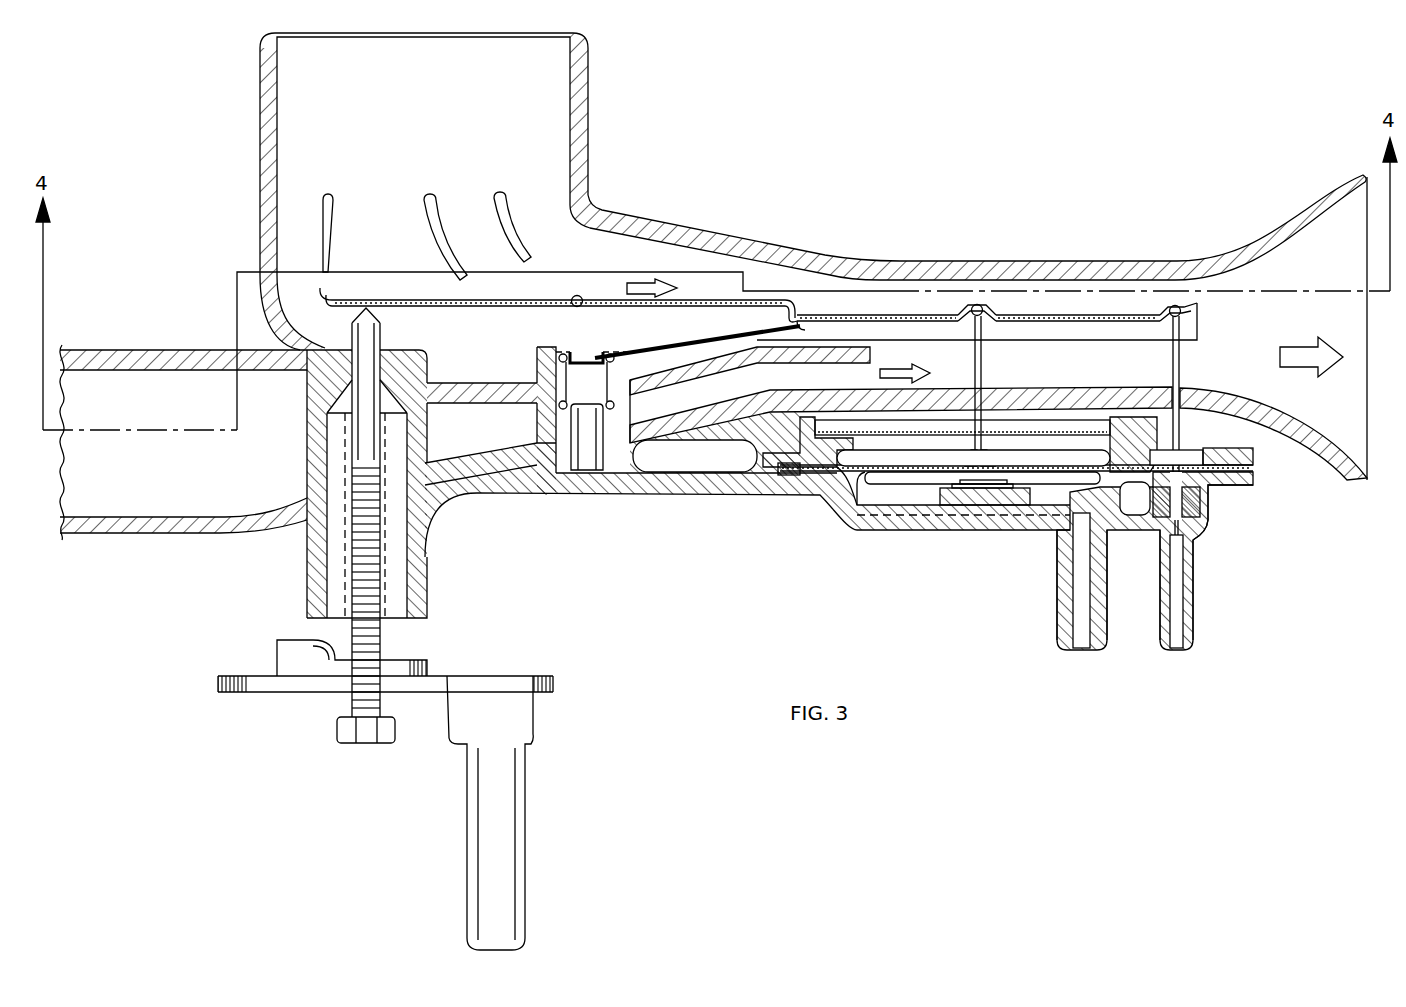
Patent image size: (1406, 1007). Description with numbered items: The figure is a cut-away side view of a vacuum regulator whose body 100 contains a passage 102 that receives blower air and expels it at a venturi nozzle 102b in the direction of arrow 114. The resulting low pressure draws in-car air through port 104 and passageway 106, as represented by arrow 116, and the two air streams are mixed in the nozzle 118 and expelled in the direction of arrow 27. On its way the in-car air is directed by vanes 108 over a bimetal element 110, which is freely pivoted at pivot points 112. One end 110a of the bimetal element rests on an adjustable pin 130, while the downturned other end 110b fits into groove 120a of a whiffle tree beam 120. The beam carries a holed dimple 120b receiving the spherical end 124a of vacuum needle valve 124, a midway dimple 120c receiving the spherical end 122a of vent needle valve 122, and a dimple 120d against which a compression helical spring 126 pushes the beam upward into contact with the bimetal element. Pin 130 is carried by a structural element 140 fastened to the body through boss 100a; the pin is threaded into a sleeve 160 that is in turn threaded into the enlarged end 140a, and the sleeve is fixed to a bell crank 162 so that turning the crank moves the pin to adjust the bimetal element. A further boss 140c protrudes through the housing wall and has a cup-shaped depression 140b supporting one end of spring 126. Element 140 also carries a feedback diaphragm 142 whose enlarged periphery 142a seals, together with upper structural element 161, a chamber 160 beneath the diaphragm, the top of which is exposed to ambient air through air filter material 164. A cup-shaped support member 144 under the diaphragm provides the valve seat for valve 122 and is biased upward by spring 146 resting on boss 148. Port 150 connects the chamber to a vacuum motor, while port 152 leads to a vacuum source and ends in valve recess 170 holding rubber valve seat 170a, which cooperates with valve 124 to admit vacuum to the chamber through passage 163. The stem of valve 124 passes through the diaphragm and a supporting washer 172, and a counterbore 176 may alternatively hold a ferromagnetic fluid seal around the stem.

The arrow 27 is at (1331, 357).
The body 100 is at (262, 195).
The boss 100a is at (668, 455).
The passage 102 is at (113, 468).
The venturi nozzle 102b is at (872, 362).
The port 104 is at (550, 52).
The passageway 106 is at (468, 158).
The vanes 108 is at (332, 225).
The bimetal element 110 is at (497, 308).
The end of bimetal element 110a is at (333, 297).
The downturned end of bimetal element 110b is at (792, 298).
The pivot points 112 is at (580, 295).
The arrow 114 is at (956, 374).
The arrow 116 is at (653, 280).
The nozzle 118 is at (1335, 319).
The whiffle tree beam 120 is at (1200, 343).
The groove 120a is at (801, 313).
The holed dimple 120b is at (1168, 311).
The dimple 120c is at (994, 311).
The dimple 120d is at (593, 352).
The vent needle valve 122 is at (983, 370).
The spherical end of vent needle valve 122a is at (980, 305).
The vacuum needle valve 124 is at (1181, 377).
The spherical end of vacuum needle valve 124a is at (1178, 306).
The compression helical spring 126 is at (637, 343).
The adjustable pin 130 is at (352, 328).
The structural element 140 is at (500, 487).
The enlarged end of structural element 140a is at (307, 527).
The cup-shaped depression 140b is at (640, 370).
The boss 140c is at (633, 412).
The feedback diaphragm 142 is at (1133, 508).
The enlarged periphery 142a is at (1237, 452).
The cup-shaped support member 144 is at (910, 483).
The spring 146 is at (983, 490).
The boss 148 is at (1025, 487).
The port 150 is at (1105, 597).
The port 152 is at (1195, 586).
The sleeve / chamber 160 is at (317, 628).
The upper structural element 161 is at (1255, 456).
The bell crank 162 is at (515, 855).
The passage 163 is at (1157, 520).
The air filter material 164 is at (1035, 432).
The valve recess 170 is at (1218, 497).
The rubber valve seat 170a is at (1208, 522).
The washer 172 is at (1215, 492).
The counterbore 176 is at (1181, 452).